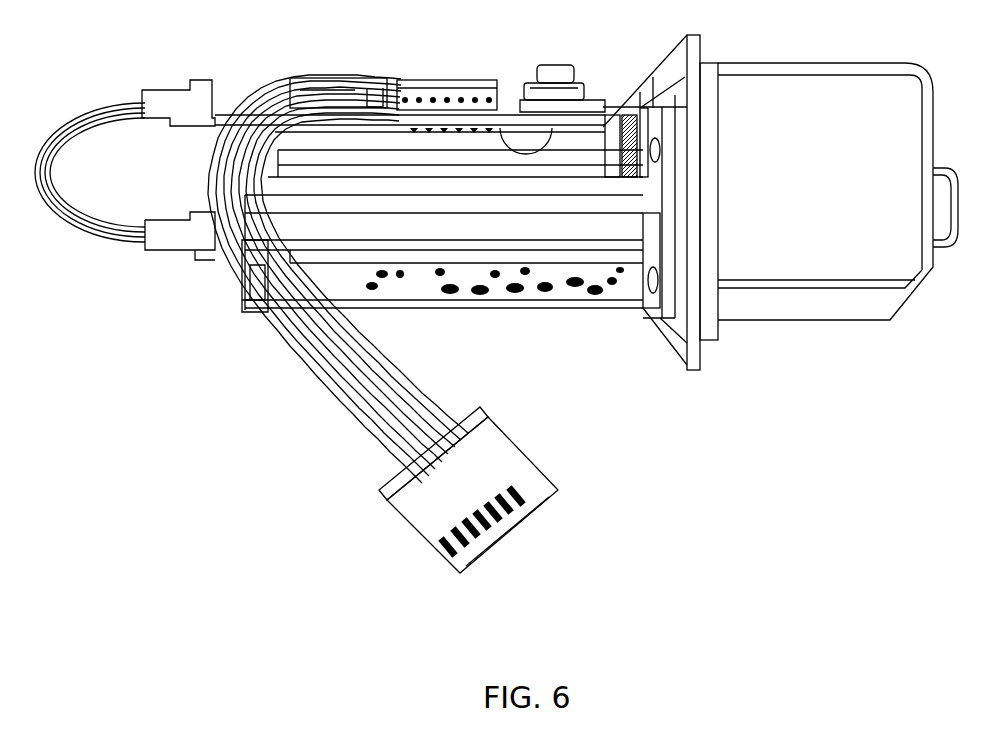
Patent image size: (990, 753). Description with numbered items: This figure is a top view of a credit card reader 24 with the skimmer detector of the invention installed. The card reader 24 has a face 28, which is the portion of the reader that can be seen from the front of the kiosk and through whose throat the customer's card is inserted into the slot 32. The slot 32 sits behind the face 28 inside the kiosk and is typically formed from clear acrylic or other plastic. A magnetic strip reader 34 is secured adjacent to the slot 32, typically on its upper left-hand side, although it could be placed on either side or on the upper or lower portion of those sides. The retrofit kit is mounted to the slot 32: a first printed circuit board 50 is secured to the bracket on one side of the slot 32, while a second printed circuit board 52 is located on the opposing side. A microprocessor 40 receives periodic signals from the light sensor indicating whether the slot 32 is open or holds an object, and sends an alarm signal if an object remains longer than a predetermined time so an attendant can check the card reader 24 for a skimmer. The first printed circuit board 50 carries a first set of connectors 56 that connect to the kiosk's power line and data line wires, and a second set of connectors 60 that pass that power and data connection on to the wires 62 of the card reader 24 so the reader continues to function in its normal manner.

The credit card reader 24 is at (606, 420).
The face 28 is at (822, 322).
The slot 32 is at (458, 203).
The magnetic strip reader 34 is at (605, 310).
The microprocessor 40 is at (553, 65).
The first printed circuit board 50 is at (606, 108).
The second printed circuit board 52 is at (228, 265).
The first set of connectors 56 is at (448, 80).
The second set of connectors 60 is at (378, 78).
The wires 62 is at (365, 440).